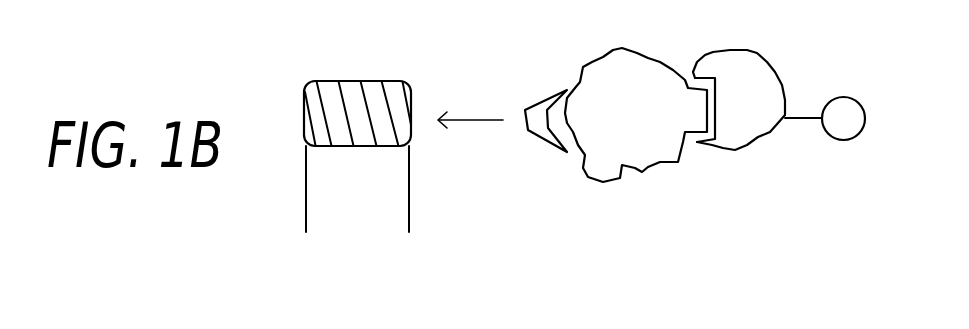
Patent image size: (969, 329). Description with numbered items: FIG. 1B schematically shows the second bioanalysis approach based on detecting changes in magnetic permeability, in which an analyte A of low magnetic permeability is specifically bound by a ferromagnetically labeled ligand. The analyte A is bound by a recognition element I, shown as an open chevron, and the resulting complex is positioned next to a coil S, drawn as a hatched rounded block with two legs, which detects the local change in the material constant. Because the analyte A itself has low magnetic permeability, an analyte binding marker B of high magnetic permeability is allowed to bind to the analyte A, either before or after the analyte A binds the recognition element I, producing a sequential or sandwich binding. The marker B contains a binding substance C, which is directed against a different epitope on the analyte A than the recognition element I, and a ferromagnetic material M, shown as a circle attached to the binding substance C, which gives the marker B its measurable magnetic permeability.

The coil S is at (359, 155).
The recognition element I is at (546, 146).
The analyte A is at (636, 115).
The analyte binding marker B is at (728, 146).
The binding substance C is at (739, 100).
The ferromagnetic material M is at (825, 118).